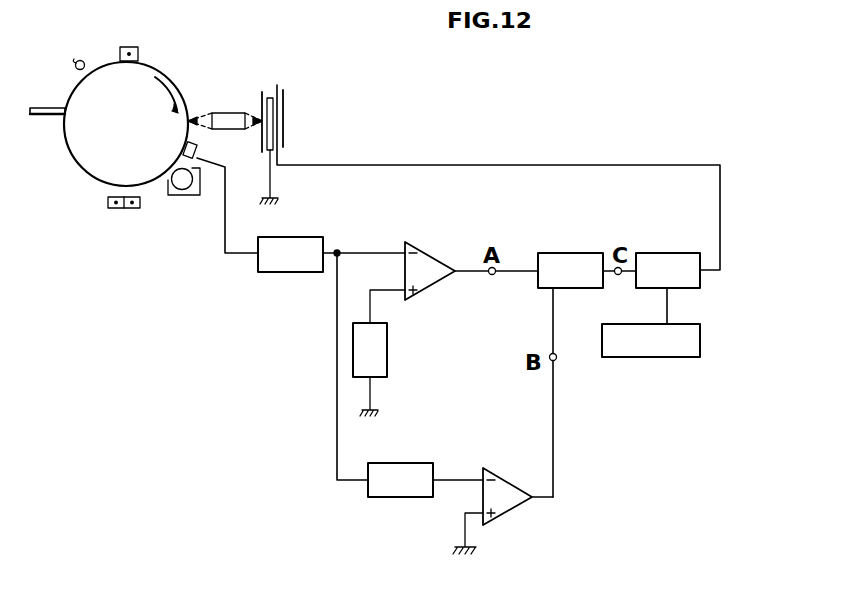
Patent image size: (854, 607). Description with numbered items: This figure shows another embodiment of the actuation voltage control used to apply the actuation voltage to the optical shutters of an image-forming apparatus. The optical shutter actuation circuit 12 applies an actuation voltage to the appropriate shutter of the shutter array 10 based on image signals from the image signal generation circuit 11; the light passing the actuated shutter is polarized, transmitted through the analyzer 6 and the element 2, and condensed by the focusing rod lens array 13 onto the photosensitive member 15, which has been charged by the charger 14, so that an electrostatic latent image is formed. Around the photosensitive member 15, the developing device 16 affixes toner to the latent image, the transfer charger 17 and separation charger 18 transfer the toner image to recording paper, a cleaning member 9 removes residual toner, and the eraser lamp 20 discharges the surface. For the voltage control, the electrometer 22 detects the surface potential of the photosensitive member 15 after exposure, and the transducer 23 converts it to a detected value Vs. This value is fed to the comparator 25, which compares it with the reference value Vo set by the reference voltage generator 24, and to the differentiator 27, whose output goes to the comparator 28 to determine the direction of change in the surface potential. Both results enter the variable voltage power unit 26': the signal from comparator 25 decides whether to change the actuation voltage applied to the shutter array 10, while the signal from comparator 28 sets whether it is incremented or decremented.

The detector plate 2 is at (285, 106).
The analyzer 6 is at (261, 91).
The sample holder 9 is at (45, 107).
The shutter array 10 is at (278, 84).
The image signal generation circuit 11 is at (650, 358).
The optical shutter actuation circuit 12 is at (670, 253).
The focusing rod lens array 13 is at (229, 112).
The charger 14 is at (140, 53).
The photosensitive member 15 is at (177, 87).
The developing device 16 is at (182, 197).
The transfer charger 17 is at (132, 210).
The separation charger 18 is at (109, 210).
The eraser lamp 20 is at (81, 58).
The electrometer 22 is at (197, 147).
The transducer 23 is at (300, 237).
The reference voltage generator 24 is at (387, 348).
The comparator 25 is at (426, 253).
The variable voltage power unit 26' is at (587, 248).
The differentiator 27 is at (402, 463).
The comparator 28 is at (507, 509).